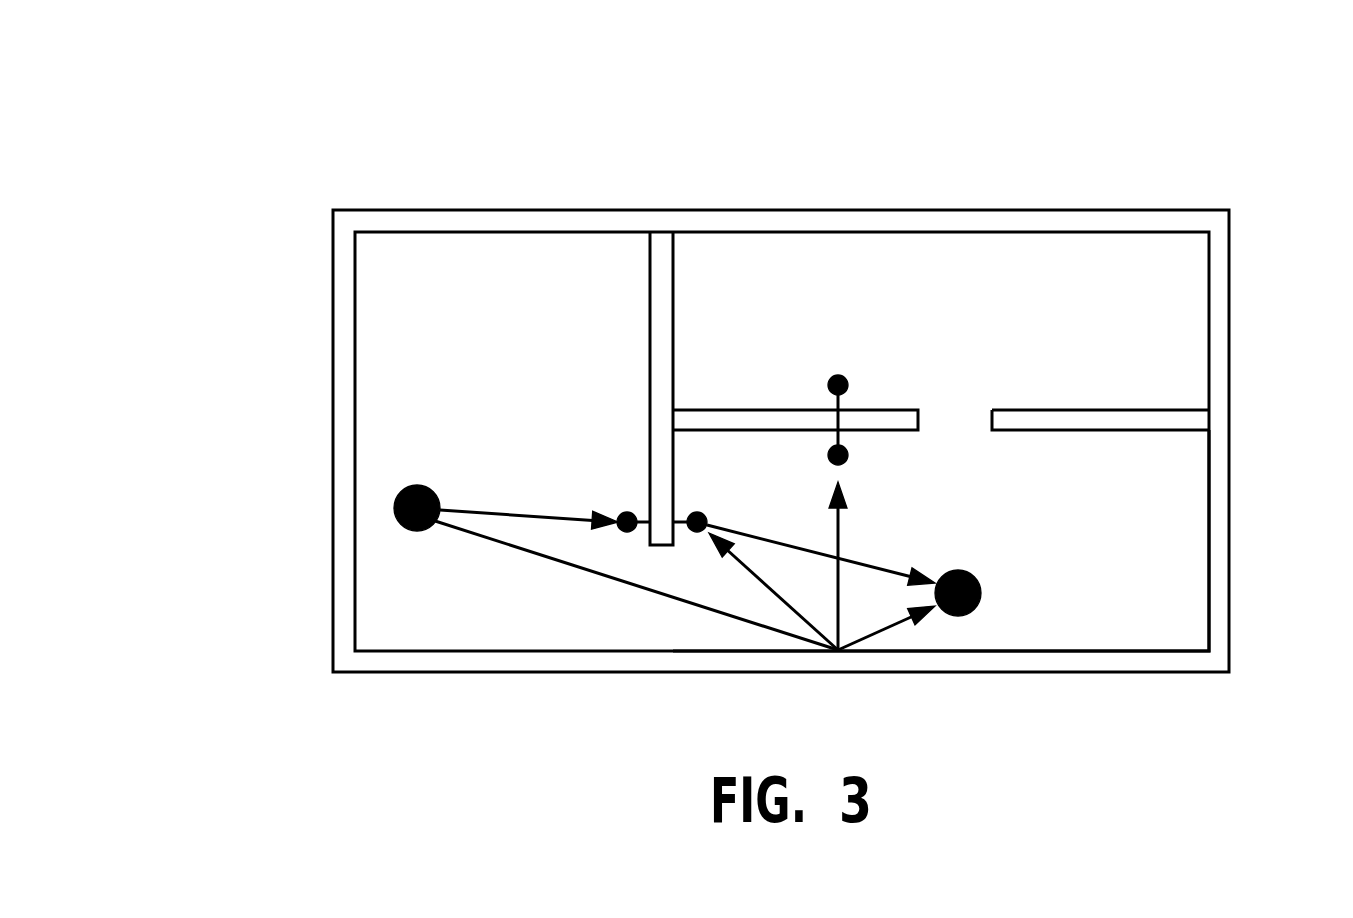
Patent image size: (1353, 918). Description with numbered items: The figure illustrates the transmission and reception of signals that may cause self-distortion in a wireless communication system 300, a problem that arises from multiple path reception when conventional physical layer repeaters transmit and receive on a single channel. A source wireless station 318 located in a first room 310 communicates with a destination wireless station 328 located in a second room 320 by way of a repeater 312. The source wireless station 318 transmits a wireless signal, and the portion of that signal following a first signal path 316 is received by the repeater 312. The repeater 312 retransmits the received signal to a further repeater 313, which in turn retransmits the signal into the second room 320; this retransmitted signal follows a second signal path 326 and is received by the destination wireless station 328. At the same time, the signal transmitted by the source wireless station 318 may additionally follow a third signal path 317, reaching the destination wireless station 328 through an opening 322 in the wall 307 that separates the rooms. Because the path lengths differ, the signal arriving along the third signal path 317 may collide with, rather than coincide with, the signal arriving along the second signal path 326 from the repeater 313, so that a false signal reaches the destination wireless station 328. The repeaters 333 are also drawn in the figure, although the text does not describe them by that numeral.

The building environment with rooms 300 is at (1020, 168).
The interior walls 307 is at (648, 308).
The room 1 310 is at (393, 357).
The wall node 312 is at (626, 512).
The wall node 313 is at (705, 516).
The signal path from source to node 316 is at (485, 508).
The signal path 317 is at (505, 545).
The source 318 is at (418, 531).
The room 2 320 is at (1188, 563).
The signal path from source to floor reflection point 322 is at (605, 603).
The signal path from node to destination 326 is at (852, 566).
The destination 328 is at (978, 575).
The repeaters 333 is at (832, 378).